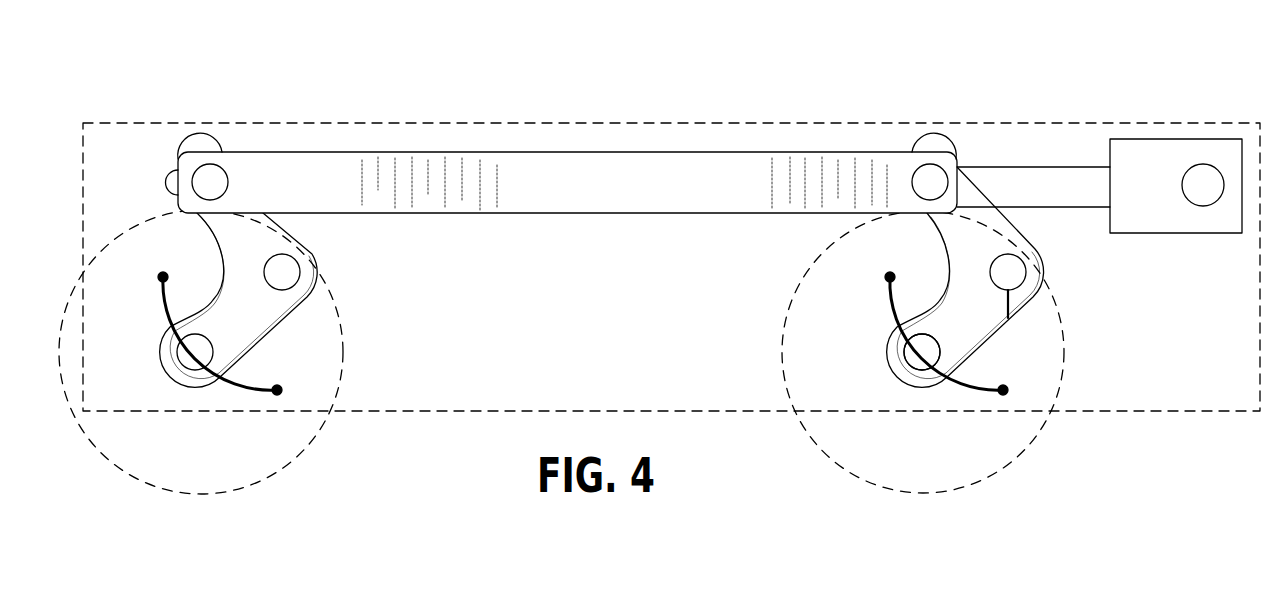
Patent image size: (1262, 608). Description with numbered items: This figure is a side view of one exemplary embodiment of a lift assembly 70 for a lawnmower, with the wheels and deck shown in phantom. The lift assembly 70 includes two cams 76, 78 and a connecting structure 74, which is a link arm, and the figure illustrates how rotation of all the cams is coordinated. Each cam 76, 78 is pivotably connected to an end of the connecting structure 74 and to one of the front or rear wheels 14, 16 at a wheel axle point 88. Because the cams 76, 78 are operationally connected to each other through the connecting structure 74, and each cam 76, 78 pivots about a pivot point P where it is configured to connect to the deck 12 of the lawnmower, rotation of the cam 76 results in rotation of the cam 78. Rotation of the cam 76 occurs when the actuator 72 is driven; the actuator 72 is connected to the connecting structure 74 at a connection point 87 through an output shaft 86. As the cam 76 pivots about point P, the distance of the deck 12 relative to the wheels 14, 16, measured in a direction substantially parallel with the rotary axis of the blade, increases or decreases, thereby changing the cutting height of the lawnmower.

The deck 12 is at (1197, 412).
The front wheel 14 is at (195, 490).
The rear wheel 16 is at (943, 493).
The lift assembly 70 is at (590, 96).
The actuator 72 is at (1150, 139).
The connecting structure 74 is at (458, 153).
The cam 76 is at (885, 353).
The cam 78 is at (293, 310).
The output shaft 86 is at (1032, 166).
The connection point 87 is at (910, 170).
The wheel axle point 88 is at (917, 367).